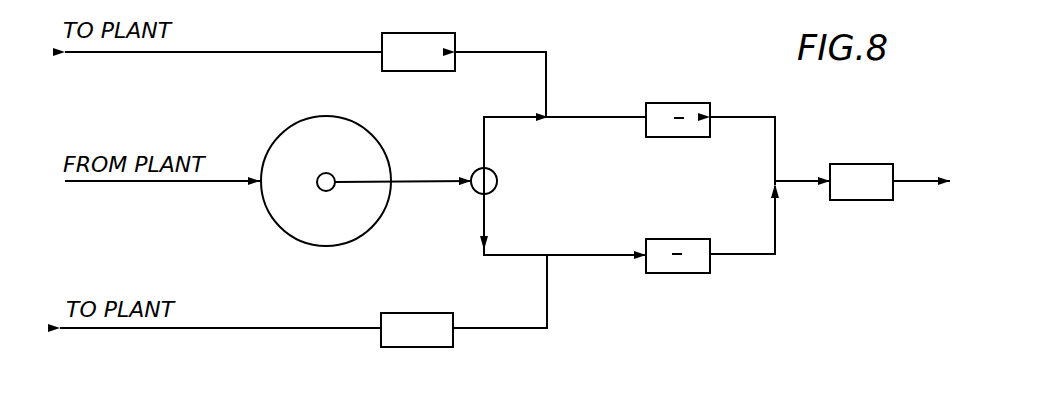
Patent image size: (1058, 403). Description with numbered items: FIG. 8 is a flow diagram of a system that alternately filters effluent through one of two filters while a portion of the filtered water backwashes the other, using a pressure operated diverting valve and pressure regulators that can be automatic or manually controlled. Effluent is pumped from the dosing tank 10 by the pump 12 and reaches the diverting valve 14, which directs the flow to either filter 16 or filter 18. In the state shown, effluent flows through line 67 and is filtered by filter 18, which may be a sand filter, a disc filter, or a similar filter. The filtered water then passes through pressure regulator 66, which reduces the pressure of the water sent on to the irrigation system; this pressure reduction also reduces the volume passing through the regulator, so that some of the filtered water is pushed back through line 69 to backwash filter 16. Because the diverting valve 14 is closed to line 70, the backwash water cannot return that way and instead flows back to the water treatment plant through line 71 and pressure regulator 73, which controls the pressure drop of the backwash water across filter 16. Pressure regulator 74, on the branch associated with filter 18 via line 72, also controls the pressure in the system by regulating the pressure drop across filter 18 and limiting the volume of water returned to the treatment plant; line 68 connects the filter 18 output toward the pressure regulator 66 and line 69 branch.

The dosing tank 10 is at (370, 232).
The pump 12 is at (322, 190).
The diverting valve 14 is at (498, 178).
The filter 16 is at (670, 138).
The filter 18 is at (680, 275).
The pressure regulator 66 is at (873, 163).
The line 67 is at (484, 213).
The pressure line 68 is at (777, 236).
The line 69 is at (777, 150).
The line 70 is at (484, 133).
The line 71 is at (548, 66).
The pressure line 72 is at (525, 330).
The pressure regulator 73 is at (430, 72).
The pressure regulator 74 is at (423, 350).